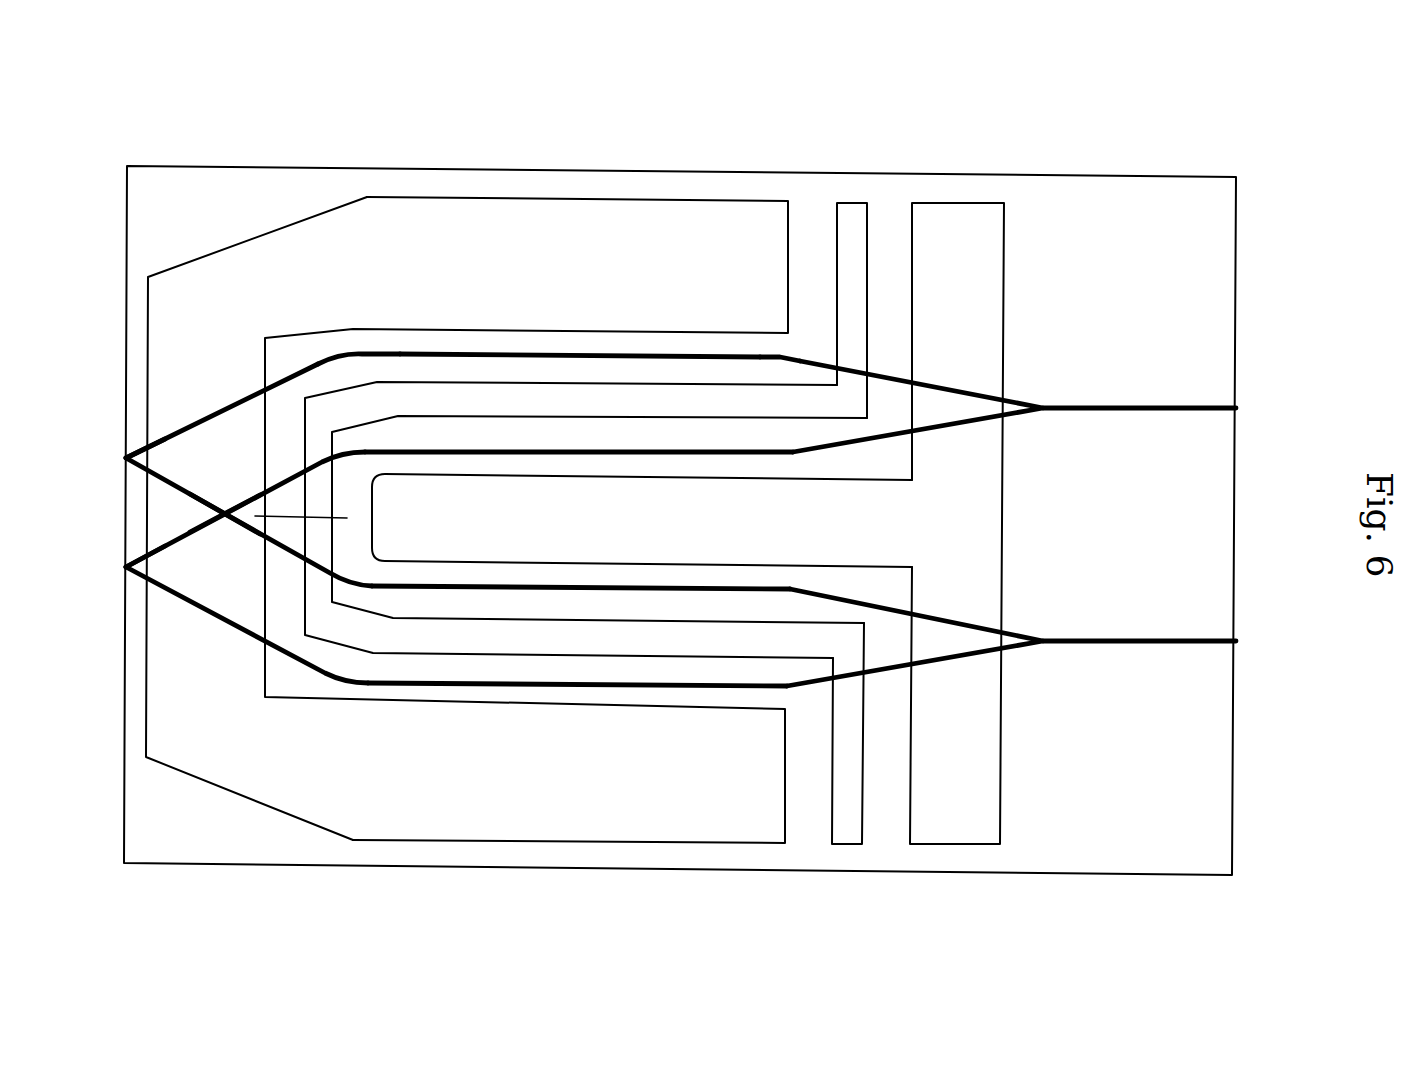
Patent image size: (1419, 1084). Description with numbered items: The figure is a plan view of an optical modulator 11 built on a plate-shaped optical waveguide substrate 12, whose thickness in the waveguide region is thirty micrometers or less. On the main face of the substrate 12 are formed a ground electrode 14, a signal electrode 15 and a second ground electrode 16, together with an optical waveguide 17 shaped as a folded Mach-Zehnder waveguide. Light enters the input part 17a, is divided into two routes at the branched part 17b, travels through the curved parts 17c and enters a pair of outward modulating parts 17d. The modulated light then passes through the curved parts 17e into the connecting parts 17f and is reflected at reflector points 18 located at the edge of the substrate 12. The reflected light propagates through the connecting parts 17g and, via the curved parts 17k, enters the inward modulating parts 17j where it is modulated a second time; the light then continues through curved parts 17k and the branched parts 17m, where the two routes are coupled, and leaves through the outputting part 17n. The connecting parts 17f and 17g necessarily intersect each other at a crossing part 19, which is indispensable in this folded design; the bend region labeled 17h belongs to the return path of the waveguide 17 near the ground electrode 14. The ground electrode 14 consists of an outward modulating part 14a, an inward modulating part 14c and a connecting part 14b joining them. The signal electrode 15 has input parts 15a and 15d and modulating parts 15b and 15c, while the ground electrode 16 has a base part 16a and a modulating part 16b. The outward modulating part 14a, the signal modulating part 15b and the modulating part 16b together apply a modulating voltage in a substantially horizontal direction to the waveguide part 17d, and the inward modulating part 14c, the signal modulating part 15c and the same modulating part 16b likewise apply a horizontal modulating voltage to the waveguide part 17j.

The optical modulator 11 is at (1228, 165).
The optical waveguide substrate 12 is at (1140, 195).
The ground electrode 14 is at (690, 190).
The outward modulating part 14a is at (575, 232).
The connecting part 14b is at (162, 520).
The inward modulating part 14c is at (597, 817).
The signal electrode 15 is at (851, 197).
The input part 15a is at (855, 273).
The modulating part 15b is at (632, 400).
The modulating part 15c is at (553, 643).
The input part 15d is at (853, 777).
The ground electrode 16 is at (967, 197).
The base part 16a is at (982, 288).
The modulating part 16b is at (813, 528).
The optical waveguide 17 is at (1182, 377).
The input part 17a is at (1100, 407).
The branched part 17b is at (945, 390).
The curved part 17c is at (778, 357).
The outward modulating part 17d is at (560, 453).
The curved part 17e is at (333, 353).
The connecting part 17f is at (240, 508).
The connecting part 17g is at (222, 522).
The bend portion of lower conductor 17h is at (333, 677).
The inward modulating part 17j is at (662, 592).
The curved part 17k is at (800, 588).
The branched part 17m is at (923, 615).
The outputting part 17n is at (1128, 638).
The reflector point 18 is at (127, 458).
The crossing part 19 is at (222, 518).